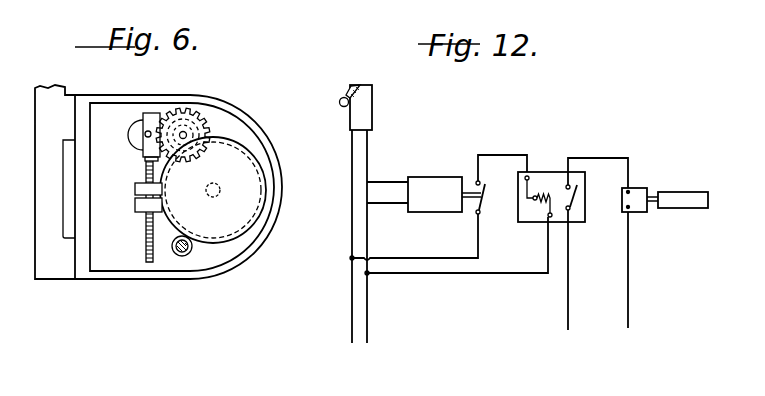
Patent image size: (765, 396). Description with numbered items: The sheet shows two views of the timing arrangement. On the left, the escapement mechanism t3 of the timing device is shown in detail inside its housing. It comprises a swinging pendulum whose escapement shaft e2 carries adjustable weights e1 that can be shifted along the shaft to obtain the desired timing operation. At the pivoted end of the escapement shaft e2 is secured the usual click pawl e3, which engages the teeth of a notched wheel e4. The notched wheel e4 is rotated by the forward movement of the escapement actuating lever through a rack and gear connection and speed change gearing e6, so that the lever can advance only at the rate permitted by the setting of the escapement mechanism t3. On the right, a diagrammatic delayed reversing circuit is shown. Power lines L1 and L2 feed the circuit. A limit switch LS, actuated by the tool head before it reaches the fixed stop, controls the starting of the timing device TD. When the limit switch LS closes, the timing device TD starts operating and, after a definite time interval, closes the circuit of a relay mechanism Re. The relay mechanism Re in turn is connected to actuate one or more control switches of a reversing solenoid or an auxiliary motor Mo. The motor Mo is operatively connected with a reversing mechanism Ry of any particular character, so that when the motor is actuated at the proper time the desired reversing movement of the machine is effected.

In FIG. 6, the weight e1 is at (133, 197).
In FIG. 6, the escapement shaft e2 is at (143, 170).
In FIG. 6, the click pawl e3 is at (145, 117).
In FIG. 6, the notched wheel e4 is at (195, 110).
In FIG. 6, the speed change gearing e6 is at (255, 156).
In FIG. 6, the escapement mechanism t3 is at (225, 105).
In FIG. 12, the power line L1 is at (348, 320).
In FIG. 12, the power line L2 is at (368, 332).
In FIG. 12, the limit switch LS is at (372, 108).
In FIG. 12, the timing device TD is at (446, 195).
In FIG. 12, the relay mechanism Re is at (547, 172).
In FIG. 12, the auxiliary motor Mo is at (637, 187).
In FIG. 12, the reversing mechanism Ry is at (680, 192).